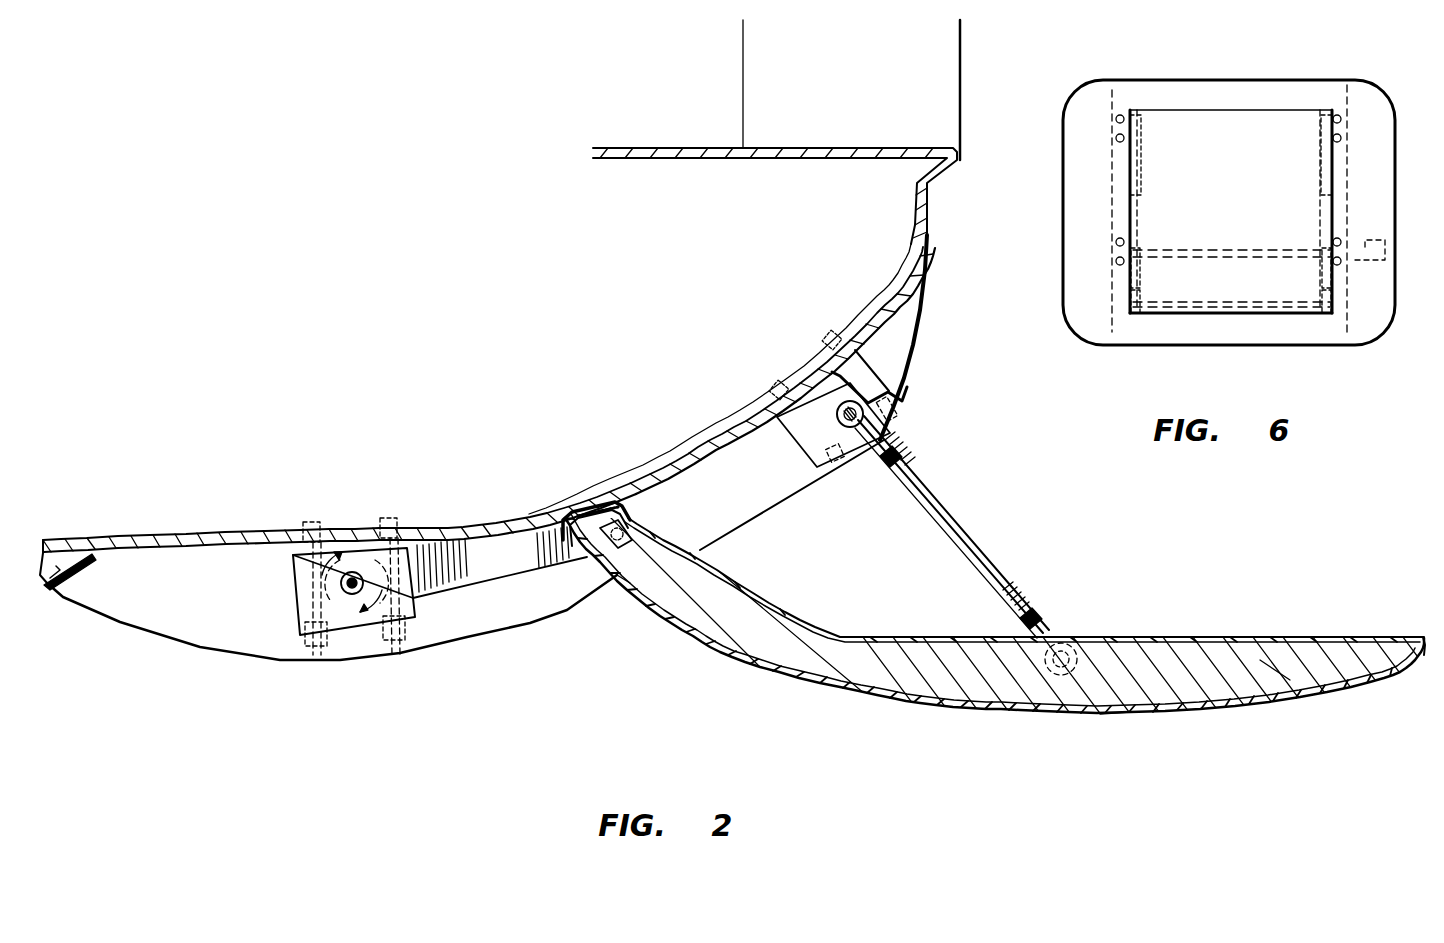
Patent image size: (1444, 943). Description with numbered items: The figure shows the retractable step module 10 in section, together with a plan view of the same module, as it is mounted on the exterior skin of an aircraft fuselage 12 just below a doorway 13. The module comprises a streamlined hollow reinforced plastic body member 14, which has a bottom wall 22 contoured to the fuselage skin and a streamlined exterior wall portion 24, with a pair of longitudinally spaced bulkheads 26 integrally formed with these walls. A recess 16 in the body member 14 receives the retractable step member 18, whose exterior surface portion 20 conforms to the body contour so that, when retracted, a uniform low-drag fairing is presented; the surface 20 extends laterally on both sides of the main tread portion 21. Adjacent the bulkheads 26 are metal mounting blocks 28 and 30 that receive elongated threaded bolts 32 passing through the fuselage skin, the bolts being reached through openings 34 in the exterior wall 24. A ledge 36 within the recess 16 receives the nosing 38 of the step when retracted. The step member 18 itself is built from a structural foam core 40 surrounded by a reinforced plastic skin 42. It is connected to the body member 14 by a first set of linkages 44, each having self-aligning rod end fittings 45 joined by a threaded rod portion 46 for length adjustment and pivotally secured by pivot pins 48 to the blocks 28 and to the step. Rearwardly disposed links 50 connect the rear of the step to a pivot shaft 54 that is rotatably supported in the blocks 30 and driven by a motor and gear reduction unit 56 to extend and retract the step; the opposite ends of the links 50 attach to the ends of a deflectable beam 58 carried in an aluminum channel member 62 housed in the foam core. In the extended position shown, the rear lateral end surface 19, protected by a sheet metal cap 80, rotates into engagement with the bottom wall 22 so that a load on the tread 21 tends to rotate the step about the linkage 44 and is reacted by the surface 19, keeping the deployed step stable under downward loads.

In FIG. 2, the step module 10 is at (1030, 508).
In FIG. 6, the step module 10 is at (1198, 70).
In FIG. 2, the aircraft fuselage 12 is at (487, 509).
In FIG. 2, the doorway 13 is at (960, 72).
In FIG. 2, the body member 14 is at (283, 662).
In FIG. 6, the body member 14 is at (1258, 82).
In FIG. 2, the recess 16 is at (234, 611).
In FIG. 2, the step member 18 is at (1175, 713).
In FIG. 6, the step member 18 is at (1290, 181).
In FIG. 2, the rear lateral end surface 19 is at (600, 506).
In FIG. 2, the exterior surface portion 20 is at (962, 710).
In FIG. 2, the main tread portion 21 is at (1185, 637).
In FIG. 2, the bottom wall 22 is at (712, 452).
In FIG. 2, the exterior wall portion 24 is at (916, 340).
In FIG. 2, the bulkheads 26 is at (467, 627).
In FIG. 6, the bulkheads 26 is at (1110, 205).
In FIG. 2, the mounting block 28 is at (822, 386).
In FIG. 6, the mounting block 28 is at (1118, 105).
In FIG. 2, the mounting block 30 is at (300, 625).
In FIG. 6, the mounting block 30 is at (1112, 258).
In FIG. 2, the threaded bolts 32 is at (318, 655).
In FIG. 2, the openings 34 is at (400, 655).
In FIG. 6, the openings 34 is at (1113, 119).
In FIG. 2, the ledge 36 is at (882, 375).
In FIG. 2, the nosing 38 is at (1430, 643).
In FIG. 2, the structural foam core 40 is at (1290, 680).
In FIG. 2, the reinforced plastic skin 42 is at (1135, 708).
In FIG. 2, the linkages 44 is at (996, 555).
In FIG. 6, the linkages 44 is at (1118, 161).
In FIG. 2, the rod end fittings 45 is at (900, 462).
In FIG. 2, the threaded rod portion 46 is at (963, 553).
In FIG. 2, the pivot pin 48 is at (837, 415).
In FIG. 2, the links 50 is at (517, 567).
In FIG. 6, the links 50 is at (1130, 290).
In FIG. 2, the pivot shaft 54 is at (352, 583).
In FIG. 6, the pivot shaft 54 is at (1247, 252).
In FIG. 6, the motor and gear reduction unit 56 is at (1385, 240).
In FIG. 2, the deflectable beam 58 is at (617, 575).
In FIG. 6, the deflectable beam 58 is at (1222, 303).
In FIG. 2, the channel member 62 is at (632, 522).
In FIG. 2, the sheet metal cap 80 is at (615, 505).